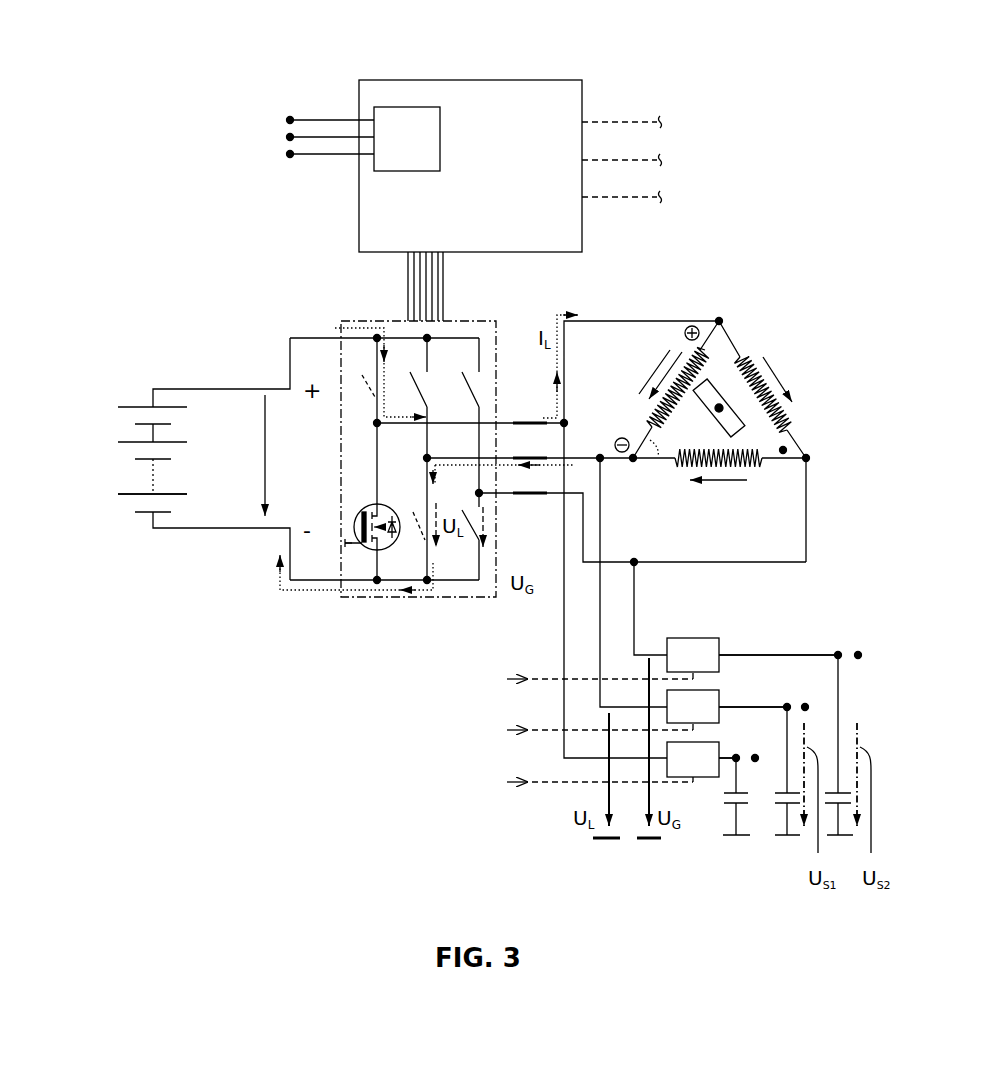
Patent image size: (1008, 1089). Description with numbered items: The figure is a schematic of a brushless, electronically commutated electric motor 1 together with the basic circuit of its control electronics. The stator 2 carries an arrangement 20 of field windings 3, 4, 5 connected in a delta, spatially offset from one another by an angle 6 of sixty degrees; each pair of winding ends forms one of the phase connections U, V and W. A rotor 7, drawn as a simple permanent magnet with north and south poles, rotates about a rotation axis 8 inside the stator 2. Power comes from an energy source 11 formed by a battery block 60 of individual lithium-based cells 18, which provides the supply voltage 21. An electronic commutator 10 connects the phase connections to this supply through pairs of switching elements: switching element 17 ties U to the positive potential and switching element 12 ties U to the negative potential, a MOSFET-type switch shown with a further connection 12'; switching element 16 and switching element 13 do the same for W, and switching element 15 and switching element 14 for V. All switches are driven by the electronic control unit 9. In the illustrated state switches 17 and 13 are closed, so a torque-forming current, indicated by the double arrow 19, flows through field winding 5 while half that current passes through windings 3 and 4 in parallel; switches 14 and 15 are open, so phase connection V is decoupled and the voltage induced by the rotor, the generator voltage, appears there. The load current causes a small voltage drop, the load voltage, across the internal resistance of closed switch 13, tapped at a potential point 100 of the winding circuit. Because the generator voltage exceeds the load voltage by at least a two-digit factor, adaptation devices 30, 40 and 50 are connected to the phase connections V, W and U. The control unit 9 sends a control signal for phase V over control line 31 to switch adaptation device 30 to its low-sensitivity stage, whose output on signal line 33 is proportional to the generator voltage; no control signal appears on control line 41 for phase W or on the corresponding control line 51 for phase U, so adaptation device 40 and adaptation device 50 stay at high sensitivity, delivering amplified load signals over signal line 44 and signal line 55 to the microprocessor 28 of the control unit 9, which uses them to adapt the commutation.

The electric motor 1 is at (800, 336).
The stator 2 is at (785, 452).
The field winding 3 is at (746, 360).
The field winding 4 is at (753, 462).
The field winding 5 is at (660, 408).
The angle 6 is at (646, 462).
The rotor 7 is at (721, 393).
The rotation axis 8 is at (718, 414).
The electronic control unit 9 is at (490, 112).
The electronic commutator 10 is at (343, 320).
The energy source 11 is at (103, 435).
The switching element 12 is at (352, 574).
The gate terminal 12' is at (353, 587).
The switching element 13 is at (420, 525).
The switching element 14 is at (478, 522).
The switching element 15 is at (470, 385).
The switching element 16 is at (420, 388).
The switching element 17 is at (368, 387).
The individual cells 18 is at (142, 448).
The double arrow 19 is at (660, 372).
The arrangement of field windings 20 is at (720, 337).
The supply voltage 21 is at (266, 420).
The microprocessor 28 is at (400, 108).
The adaptation device 30 is at (736, 617).
The control line 31 is at (602, 160).
The signal line 33 is at (301, 120).
The adaptation device 40 is at (693, 590).
The control line 41 is at (602, 197).
The signal line 44 is at (290, 137).
The adaptation device 50 is at (650, 600).
The output signal line 51 is at (602, 122).
The signal line 55 is at (301, 154).
The battery block 60 is at (138, 416).
The potential point 100 is at (377, 423).